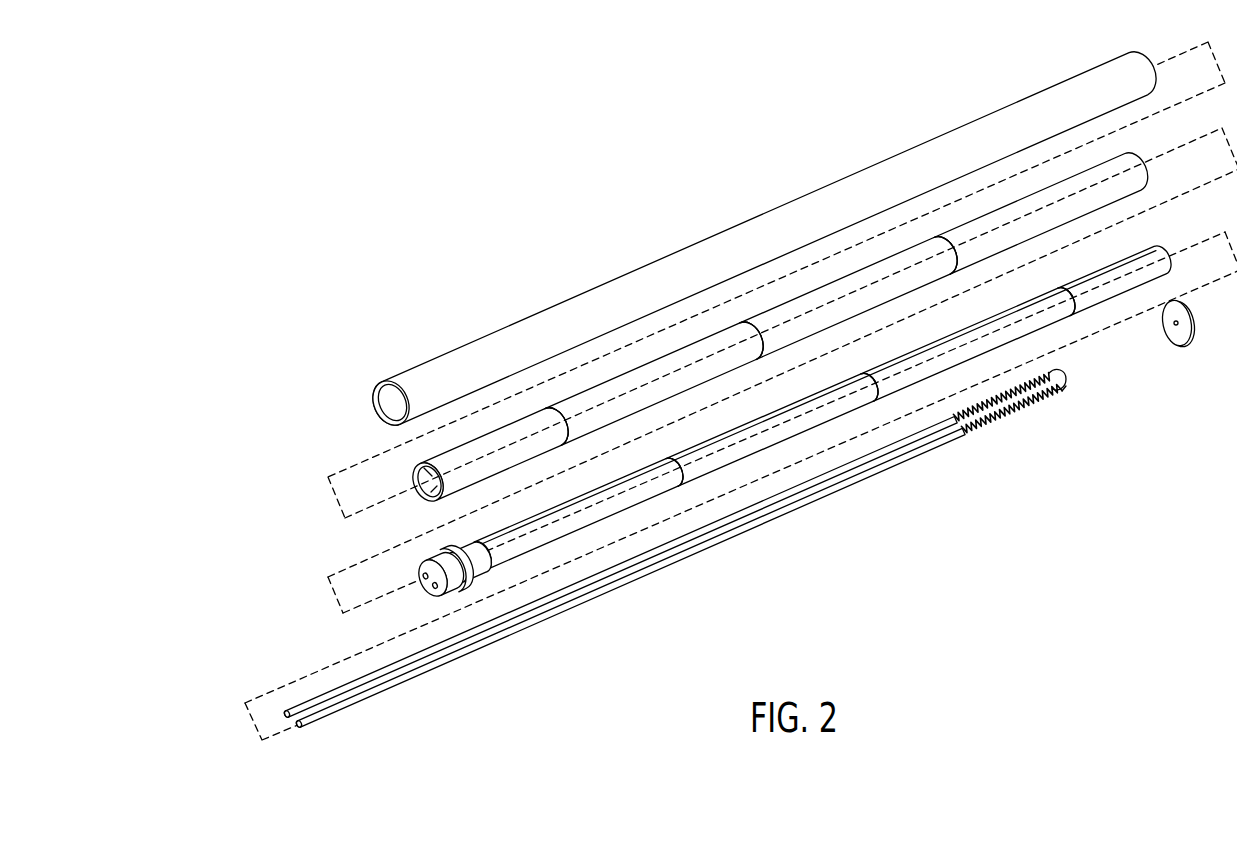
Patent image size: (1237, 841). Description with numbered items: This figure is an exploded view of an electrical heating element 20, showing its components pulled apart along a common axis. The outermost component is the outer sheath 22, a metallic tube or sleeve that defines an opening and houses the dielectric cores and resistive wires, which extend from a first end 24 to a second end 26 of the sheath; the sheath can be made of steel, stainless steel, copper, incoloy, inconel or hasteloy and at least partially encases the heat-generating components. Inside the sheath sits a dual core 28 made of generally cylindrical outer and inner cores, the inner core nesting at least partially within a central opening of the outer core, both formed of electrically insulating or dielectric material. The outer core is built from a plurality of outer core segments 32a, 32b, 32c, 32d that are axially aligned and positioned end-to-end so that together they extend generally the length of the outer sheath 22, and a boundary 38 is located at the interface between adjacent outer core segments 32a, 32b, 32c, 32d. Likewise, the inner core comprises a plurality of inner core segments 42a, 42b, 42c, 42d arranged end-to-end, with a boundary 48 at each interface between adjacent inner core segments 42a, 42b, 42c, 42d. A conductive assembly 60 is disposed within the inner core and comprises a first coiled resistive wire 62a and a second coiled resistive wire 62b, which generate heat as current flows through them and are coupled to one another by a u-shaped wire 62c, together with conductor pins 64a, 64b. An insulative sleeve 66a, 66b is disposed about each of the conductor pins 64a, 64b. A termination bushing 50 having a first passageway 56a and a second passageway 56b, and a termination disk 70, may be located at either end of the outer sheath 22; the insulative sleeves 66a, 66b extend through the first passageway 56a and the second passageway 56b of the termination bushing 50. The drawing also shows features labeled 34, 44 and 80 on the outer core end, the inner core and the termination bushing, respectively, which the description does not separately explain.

The electrical heating element 20 is at (670, 128).
The outer sheath 22 is at (969, 131).
The first end 24 is at (375, 337).
The second end 26 is at (1098, 52).
The dual core 28 is at (297, 521).
The outer core segment 32a is at (465, 455).
The outer core segment 32b is at (645, 368).
The outer core segment 32c is at (827, 288).
The outer core segment 32d is at (1015, 205).
The end openings 34 is at (420, 470).
The boundary 38 is at (550, 410).
The inner core segment 42a is at (540, 543).
The inner core segment 42b is at (747, 453).
The inner core segment 42c is at (933, 372).
The inner core segment 42d is at (1123, 287).
The inner tube 44 is at (610, 490).
The boundary 48 is at (485, 560).
The termination bushing 50 is at (413, 588).
The first passageway 56a is at (423, 577).
The second passageway 56b is at (433, 587).
The conductive assembly 60 is at (624, 577).
The first coiled resistive wire 62a is at (1043, 375).
The second coiled resistive wire 62b is at (1032, 403).
The u-shaped wire 62c is at (1066, 379).
The conductor pin 64a is at (608, 573).
The conductor pin 64b is at (705, 545).
The insulative sleeve 66a is at (360, 683).
The insulative sleeve 66b is at (407, 677).
The termination disk 70 is at (1185, 332).
The connector flange 80 is at (468, 583).